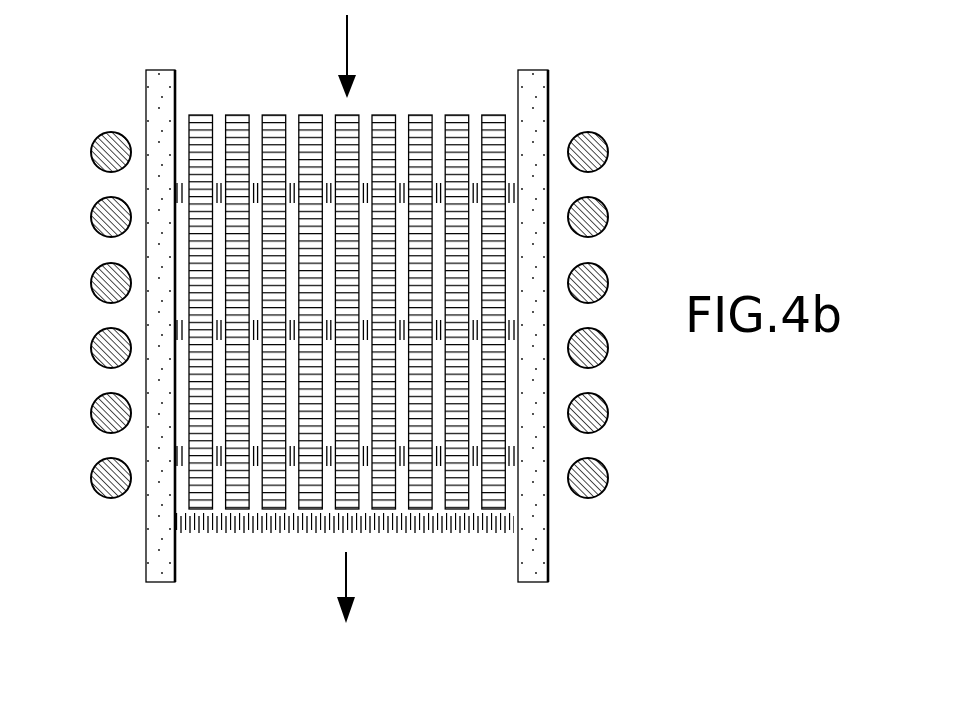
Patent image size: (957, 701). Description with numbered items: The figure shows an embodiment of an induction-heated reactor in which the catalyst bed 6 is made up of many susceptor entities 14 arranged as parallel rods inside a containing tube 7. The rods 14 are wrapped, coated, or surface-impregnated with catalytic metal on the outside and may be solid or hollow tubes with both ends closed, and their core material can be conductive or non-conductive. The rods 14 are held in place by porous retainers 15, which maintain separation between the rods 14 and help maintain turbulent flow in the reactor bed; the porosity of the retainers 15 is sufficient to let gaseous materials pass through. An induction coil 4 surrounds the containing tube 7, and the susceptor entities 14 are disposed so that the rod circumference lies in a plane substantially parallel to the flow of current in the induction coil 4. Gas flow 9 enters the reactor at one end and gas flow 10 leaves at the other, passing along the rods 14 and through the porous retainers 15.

The induction coil 4 is at (110, 262).
The catalyst bed 6 is at (411, 297).
The containing tube 7 is at (533, 538).
The gas flow 9 is at (347, 50).
The gas flow 10 is at (346, 582).
The susceptor entities 14 is at (311, 114).
The porous retainers 15 is at (512, 322).